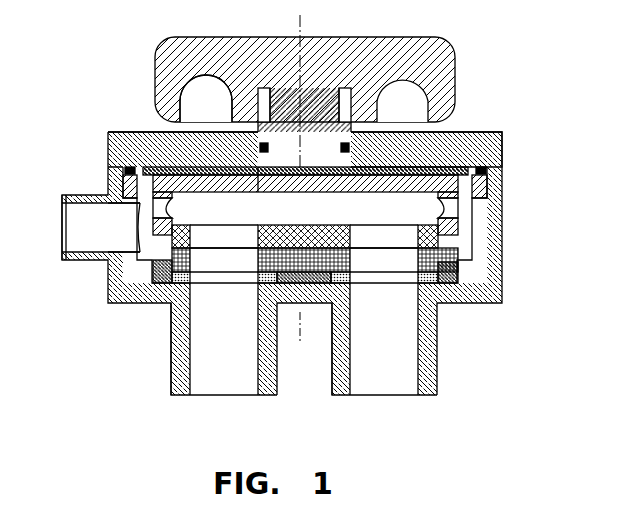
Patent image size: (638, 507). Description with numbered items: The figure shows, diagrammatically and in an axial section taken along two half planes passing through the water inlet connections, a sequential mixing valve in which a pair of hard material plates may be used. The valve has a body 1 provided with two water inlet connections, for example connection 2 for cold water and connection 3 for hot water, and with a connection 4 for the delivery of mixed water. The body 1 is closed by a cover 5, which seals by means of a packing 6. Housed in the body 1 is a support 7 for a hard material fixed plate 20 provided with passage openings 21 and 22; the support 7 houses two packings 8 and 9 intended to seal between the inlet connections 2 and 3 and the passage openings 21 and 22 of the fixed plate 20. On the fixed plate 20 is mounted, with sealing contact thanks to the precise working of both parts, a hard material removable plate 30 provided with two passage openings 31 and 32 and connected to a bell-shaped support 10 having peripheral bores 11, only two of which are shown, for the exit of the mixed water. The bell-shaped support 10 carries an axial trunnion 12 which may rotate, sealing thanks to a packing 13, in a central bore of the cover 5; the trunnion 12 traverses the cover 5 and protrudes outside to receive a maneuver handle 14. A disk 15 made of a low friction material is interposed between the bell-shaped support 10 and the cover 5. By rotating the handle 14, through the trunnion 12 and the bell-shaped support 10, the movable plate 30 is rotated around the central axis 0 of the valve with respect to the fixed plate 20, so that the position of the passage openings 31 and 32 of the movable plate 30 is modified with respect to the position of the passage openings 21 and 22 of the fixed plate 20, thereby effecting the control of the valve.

The body 1 is at (478, 280).
The water inlet connection 2 is at (208, 360).
The water inlet connection 3 is at (403, 362).
The connection for the delivery of mixed water 4 is at (78, 228).
The cover 5 is at (470, 152).
The packing 6 is at (488, 170).
The support 7 is at (157, 283).
The packing 8 is at (190, 280).
The packing 9 is at (420, 280).
The bell-shaped support 10 is at (150, 153).
The peripheral bores 11 is at (165, 208).
The axial trunnion 12 is at (285, 110).
The packing 13 is at (348, 147).
The maneuver handle 14 is at (334, 62).
The disk 15 is at (205, 166).
The hard material fixed plate 20 is at (460, 300).
The passage opening 21 is at (225, 260).
The passage opening 22 is at (380, 260).
The hard material removable plate 30 is at (445, 243).
The passage opening 31 is at (225, 238).
The passage opening 32 is at (373, 237).
The central axis 0 is at (300, 342).